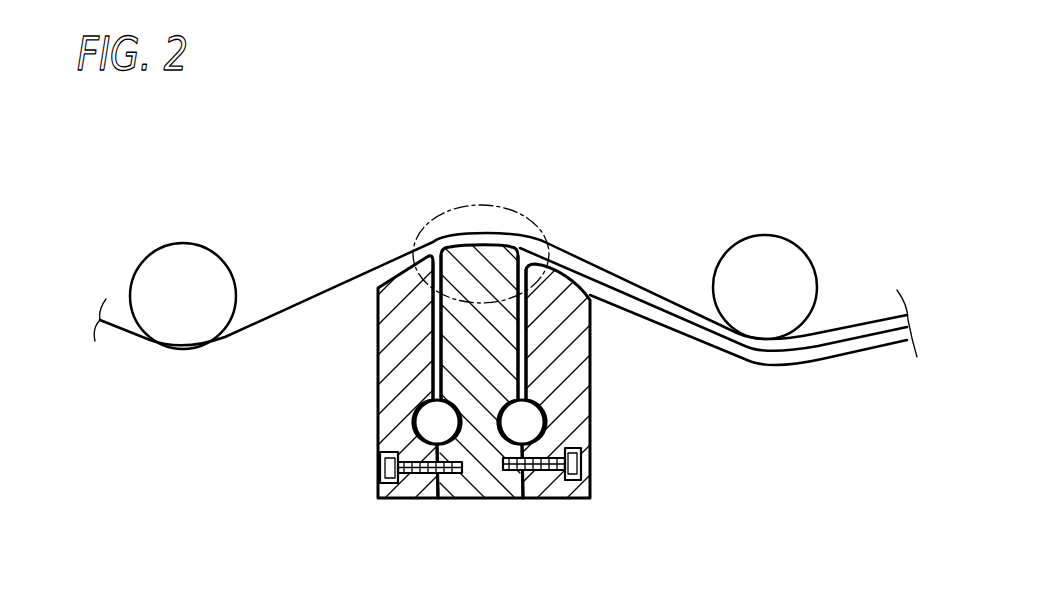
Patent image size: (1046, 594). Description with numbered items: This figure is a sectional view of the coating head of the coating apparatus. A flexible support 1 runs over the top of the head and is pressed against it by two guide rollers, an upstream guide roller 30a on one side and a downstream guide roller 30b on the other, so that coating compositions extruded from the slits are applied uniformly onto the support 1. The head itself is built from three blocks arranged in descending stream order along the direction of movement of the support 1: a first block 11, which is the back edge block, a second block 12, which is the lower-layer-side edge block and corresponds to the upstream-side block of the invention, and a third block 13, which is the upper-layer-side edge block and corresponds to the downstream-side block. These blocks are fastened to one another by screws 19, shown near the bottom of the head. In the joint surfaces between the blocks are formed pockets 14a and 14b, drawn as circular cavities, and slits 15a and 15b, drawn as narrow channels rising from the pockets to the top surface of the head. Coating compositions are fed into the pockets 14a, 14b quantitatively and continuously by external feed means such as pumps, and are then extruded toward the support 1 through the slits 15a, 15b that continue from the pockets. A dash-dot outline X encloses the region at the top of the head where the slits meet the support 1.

The flexible support 1 is at (330, 287).
The first block 11 is at (413, 487).
The second block 12 is at (475, 490).
The third block 13 is at (550, 490).
The pocket 14a is at (423, 420).
The pocket 14b is at (533, 422).
The slit 15a is at (433, 333).
The slit 15b is at (530, 355).
The screws 19 is at (387, 471).
The guide roller 30a is at (193, 257).
The guide roller 30b is at (752, 258).
The enlarged detail region X is at (512, 202).